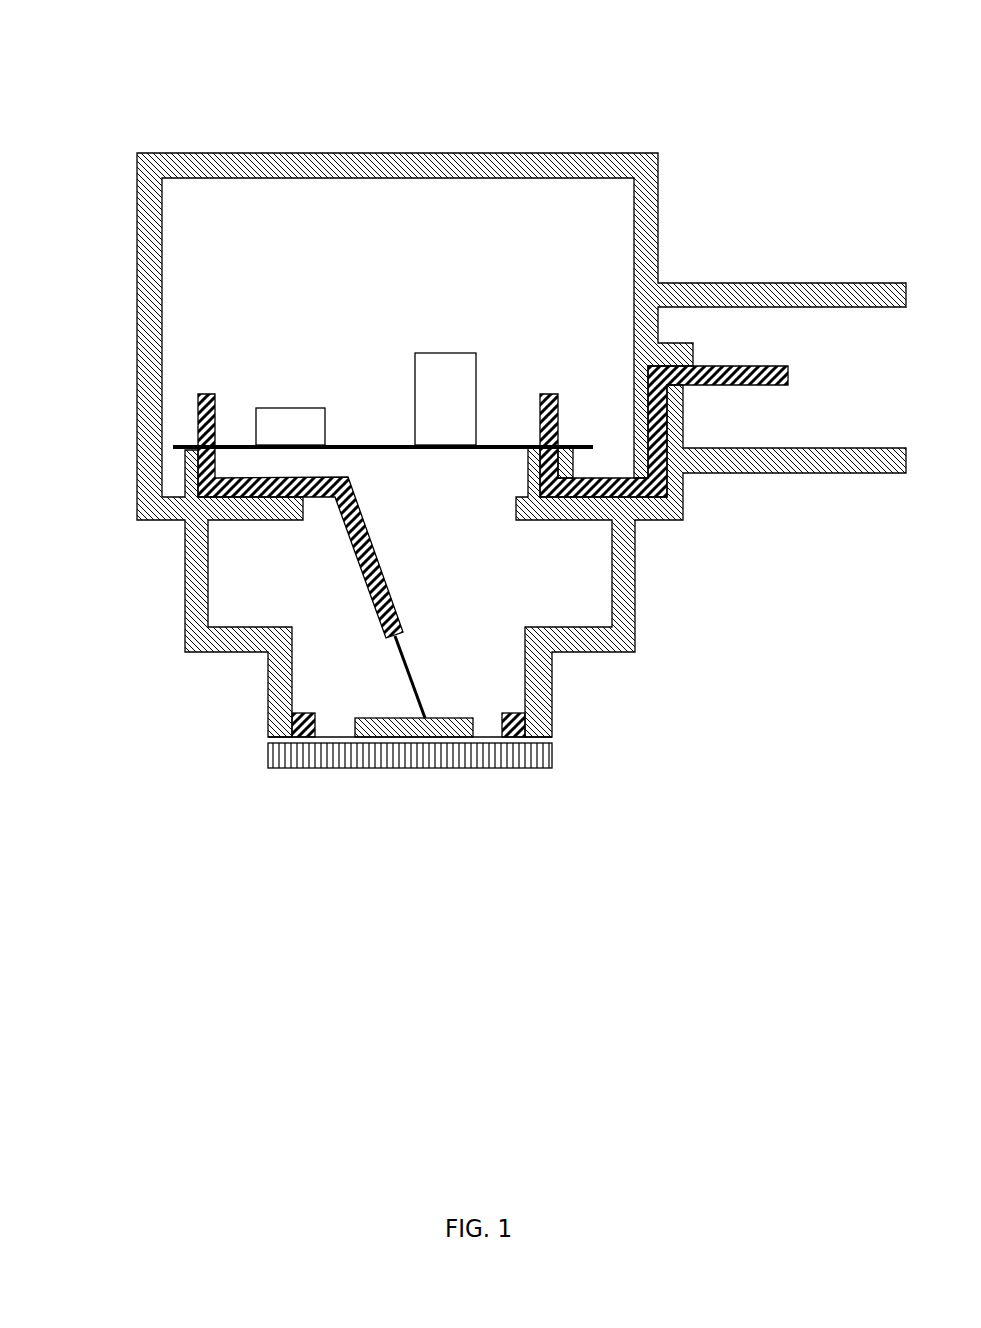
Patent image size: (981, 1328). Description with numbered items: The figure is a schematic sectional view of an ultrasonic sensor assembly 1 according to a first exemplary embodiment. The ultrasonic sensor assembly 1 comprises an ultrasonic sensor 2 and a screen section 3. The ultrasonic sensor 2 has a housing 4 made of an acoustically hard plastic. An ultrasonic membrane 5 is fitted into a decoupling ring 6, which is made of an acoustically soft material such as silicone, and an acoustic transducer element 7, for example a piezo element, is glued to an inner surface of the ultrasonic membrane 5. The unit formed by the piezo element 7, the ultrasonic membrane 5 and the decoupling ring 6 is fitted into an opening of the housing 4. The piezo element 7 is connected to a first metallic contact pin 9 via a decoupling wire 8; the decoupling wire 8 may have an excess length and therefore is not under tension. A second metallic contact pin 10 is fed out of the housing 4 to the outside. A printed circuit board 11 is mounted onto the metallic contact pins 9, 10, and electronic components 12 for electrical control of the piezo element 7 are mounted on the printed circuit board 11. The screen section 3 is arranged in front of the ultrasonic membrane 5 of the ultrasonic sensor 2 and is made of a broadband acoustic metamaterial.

The ultrasonic sensor assembly 1 is at (477, 400).
The ultrasonic sensor 2 is at (468, 430).
The screen section 3 is at (268, 757).
The housing 4 is at (137, 272).
The ultrasonic membrane 5 is at (497, 737).
The decoupling ring 6 is at (293, 710).
The acoustic transducer element 7 is at (397, 717).
The decoupling wire 8 is at (403, 648).
The first metallic contact pin 9 is at (217, 407).
The second metallic contact pin 10 is at (755, 366).
The printed circuit board 11 is at (352, 440).
The electronic components 12 is at (449, 338).